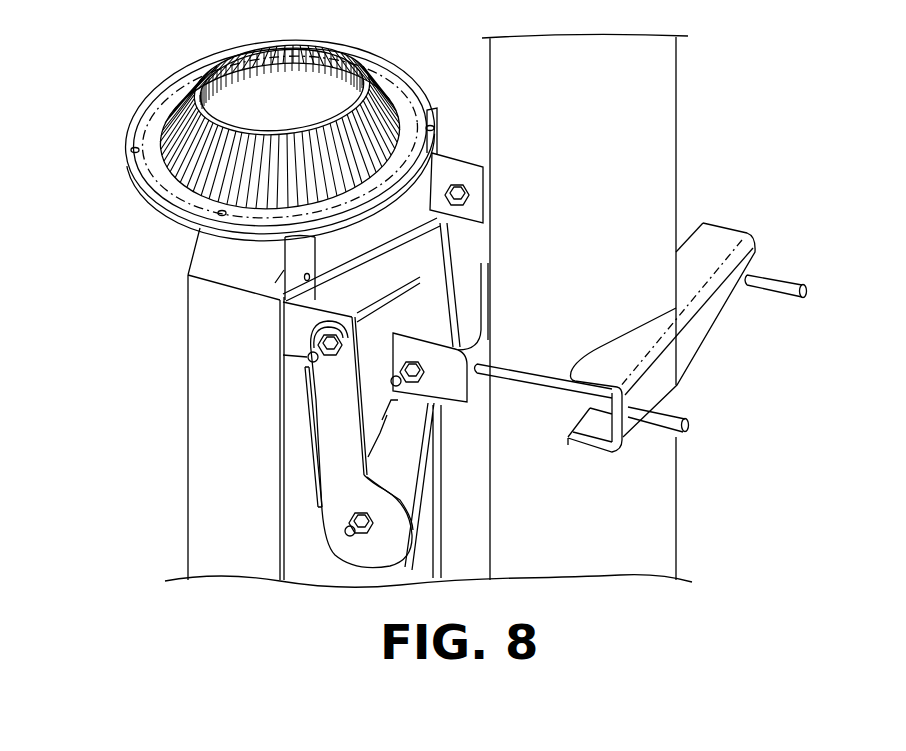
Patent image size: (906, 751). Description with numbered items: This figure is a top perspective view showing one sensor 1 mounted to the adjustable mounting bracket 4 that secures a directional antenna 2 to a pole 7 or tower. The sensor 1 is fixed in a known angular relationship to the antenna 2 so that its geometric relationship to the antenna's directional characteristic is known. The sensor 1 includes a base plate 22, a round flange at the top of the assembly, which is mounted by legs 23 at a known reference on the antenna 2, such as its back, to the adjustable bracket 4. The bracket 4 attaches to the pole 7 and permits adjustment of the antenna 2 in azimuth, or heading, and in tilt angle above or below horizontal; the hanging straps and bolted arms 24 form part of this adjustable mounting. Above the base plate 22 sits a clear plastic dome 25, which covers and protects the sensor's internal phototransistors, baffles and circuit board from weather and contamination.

The sensor 1 is at (156, 222).
The antenna 2 is at (180, 444).
The adjustable mounting bracket 4 is at (300, 410).
The pole 7 is at (664, 120).
The base plate 22 is at (148, 190).
The legs 23 is at (285, 250).
The arm 24 is at (332, 461).
The clear plastic dome 25 is at (182, 70).